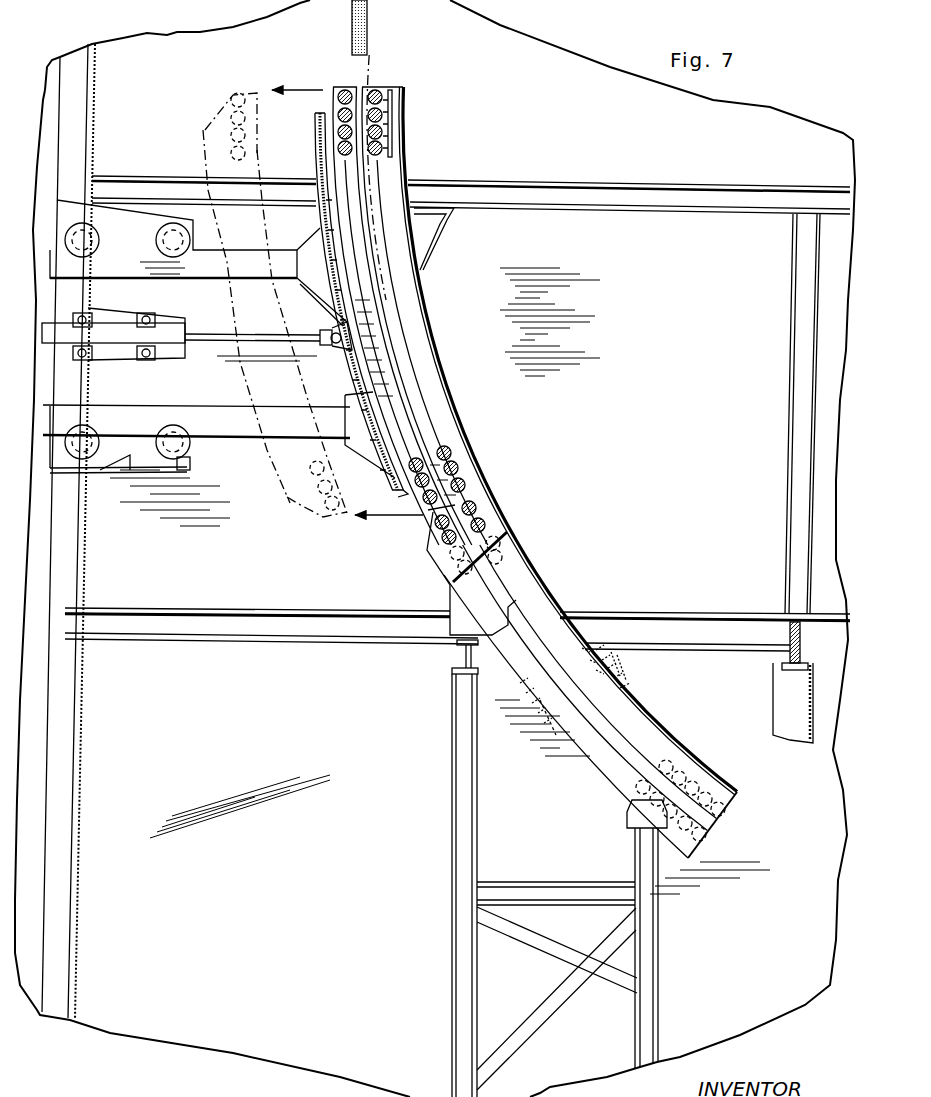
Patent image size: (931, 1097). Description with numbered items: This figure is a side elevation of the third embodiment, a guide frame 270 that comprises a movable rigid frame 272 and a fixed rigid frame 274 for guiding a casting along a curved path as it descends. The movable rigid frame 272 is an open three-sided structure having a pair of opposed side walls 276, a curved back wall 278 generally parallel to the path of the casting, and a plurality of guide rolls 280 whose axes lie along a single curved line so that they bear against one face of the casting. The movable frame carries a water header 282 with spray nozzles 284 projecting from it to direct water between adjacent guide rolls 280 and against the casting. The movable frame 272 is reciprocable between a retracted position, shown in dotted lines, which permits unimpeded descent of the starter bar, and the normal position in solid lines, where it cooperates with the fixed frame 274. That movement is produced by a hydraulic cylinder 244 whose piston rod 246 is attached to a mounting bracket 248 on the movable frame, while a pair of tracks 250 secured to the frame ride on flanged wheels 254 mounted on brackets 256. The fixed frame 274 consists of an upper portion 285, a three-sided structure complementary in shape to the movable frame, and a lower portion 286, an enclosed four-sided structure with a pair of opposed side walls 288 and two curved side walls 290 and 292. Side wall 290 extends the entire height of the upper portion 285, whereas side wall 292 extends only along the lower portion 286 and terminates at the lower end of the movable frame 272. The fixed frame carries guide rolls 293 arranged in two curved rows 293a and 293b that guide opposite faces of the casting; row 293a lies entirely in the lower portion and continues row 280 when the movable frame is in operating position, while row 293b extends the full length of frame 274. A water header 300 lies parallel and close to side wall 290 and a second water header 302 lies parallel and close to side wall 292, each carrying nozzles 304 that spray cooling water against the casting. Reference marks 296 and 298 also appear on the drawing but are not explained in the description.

The hydraulic cylinder 244 is at (172, 328).
The piston rod 246 is at (305, 344).
The mounting bracket 248 is at (333, 332).
The tracks 250 is at (215, 422).
The flanged wheels 254 is at (175, 470).
The brackets 256 is at (127, 478).
The guide frame 270 is at (510, 465).
The movable rigid frame 272 is at (328, 130).
The fixed rigid frame 274 is at (417, 316).
The side walls 276 is at (340, 95).
The curved back wall 278 is at (320, 217).
The guide rolls 280 is at (345, 88).
The water header 282 is at (323, 157).
The spray nozzles 284 is at (322, 112).
The upper portion 285 is at (437, 407).
The lower portion 286 is at (550, 583).
The side walls 288 is at (650, 731).
The curved side wall 290 is at (693, 750).
The curved side wall 292 is at (593, 780).
The guide rolls 293 is at (380, 90).
The row of guide rolls 293a is at (433, 526).
The row of guide rolls 293b is at (385, 152).
The rail web line 296 is at (385, 297).
The rail centerline 298 is at (392, 383).
The water header 300 is at (393, 128).
The second water header 302 is at (552, 730).
The nozzles 304 is at (532, 698).